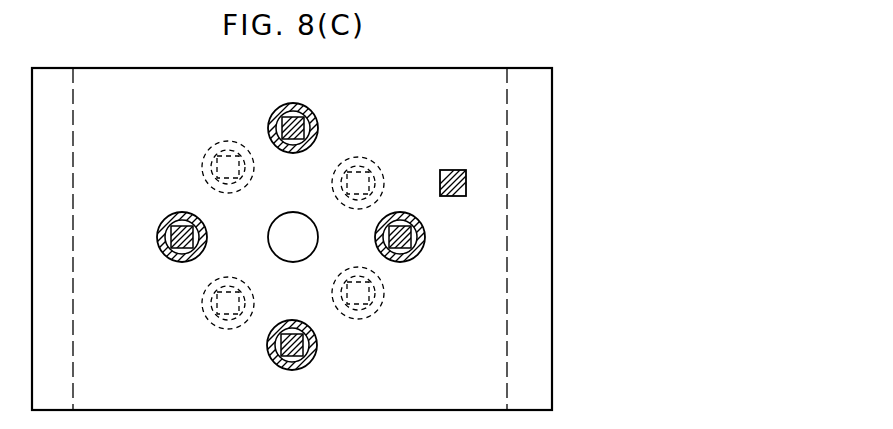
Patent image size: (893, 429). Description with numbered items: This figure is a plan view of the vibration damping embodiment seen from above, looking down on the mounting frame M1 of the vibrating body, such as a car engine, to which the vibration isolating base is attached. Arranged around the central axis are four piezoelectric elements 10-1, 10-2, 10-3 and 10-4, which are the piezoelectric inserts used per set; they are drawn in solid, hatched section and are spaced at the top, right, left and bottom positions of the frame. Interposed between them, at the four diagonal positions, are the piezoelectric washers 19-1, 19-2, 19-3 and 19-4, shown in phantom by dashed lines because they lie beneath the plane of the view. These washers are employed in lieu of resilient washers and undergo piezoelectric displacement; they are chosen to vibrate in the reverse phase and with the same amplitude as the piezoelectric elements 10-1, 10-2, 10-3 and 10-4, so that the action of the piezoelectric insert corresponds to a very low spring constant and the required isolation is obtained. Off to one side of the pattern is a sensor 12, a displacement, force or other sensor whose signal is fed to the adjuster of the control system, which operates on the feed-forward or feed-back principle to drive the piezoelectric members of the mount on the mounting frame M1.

The mounting frame M1 is at (483, 82).
The piezoelectric element 10-1 is at (408, 238).
The piezoelectric element 10-2 is at (170, 240).
The piezoelectric element 10-3 is at (308, 115).
The piezoelectric element 10-4 is at (305, 345).
The piezoelectric washer 19-1 is at (360, 292).
The piezoelectric washer 19-2 is at (222, 166).
The piezoelectric washer 19-3 is at (360, 180).
The piezoelectric washer 19-4 is at (225, 305).
The sensor 12 is at (451, 171).